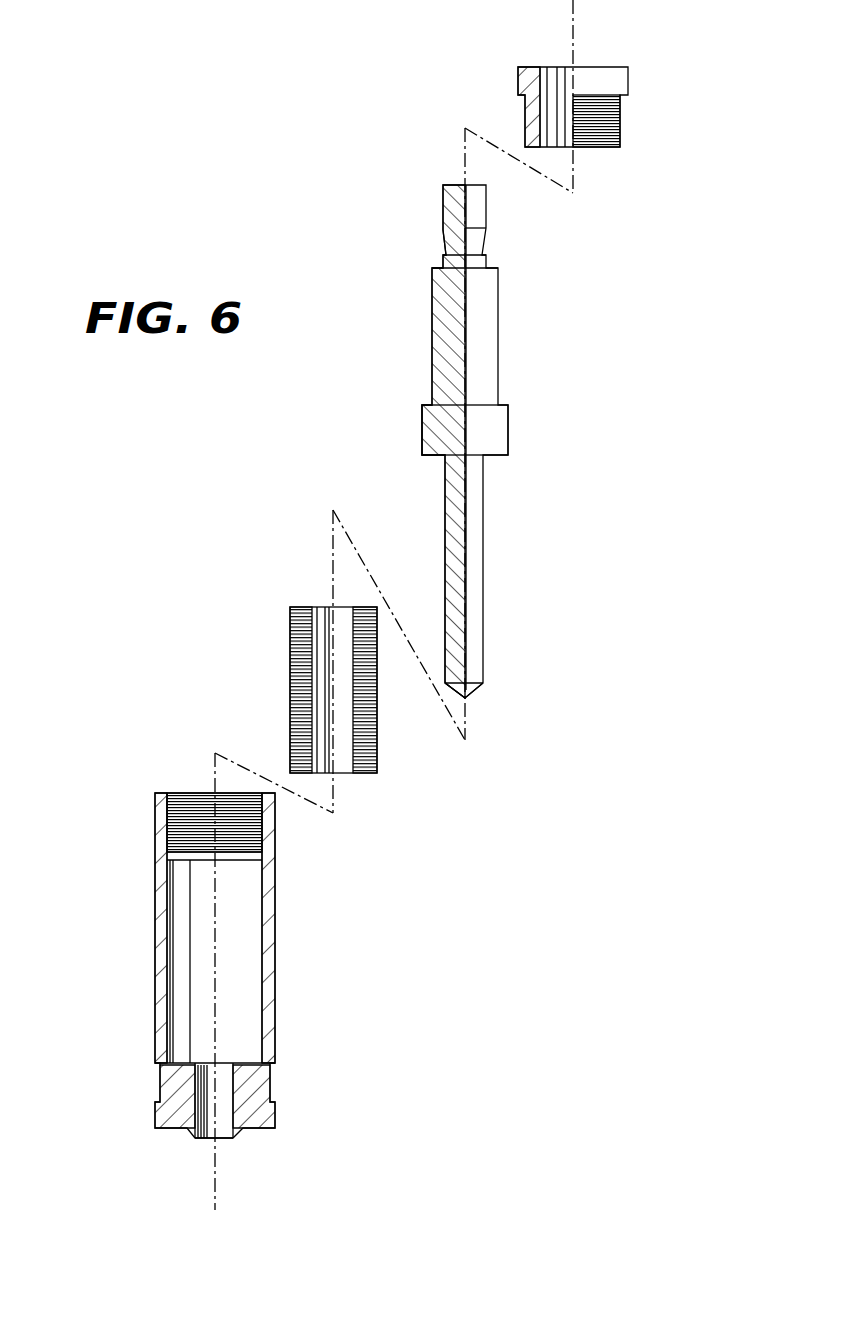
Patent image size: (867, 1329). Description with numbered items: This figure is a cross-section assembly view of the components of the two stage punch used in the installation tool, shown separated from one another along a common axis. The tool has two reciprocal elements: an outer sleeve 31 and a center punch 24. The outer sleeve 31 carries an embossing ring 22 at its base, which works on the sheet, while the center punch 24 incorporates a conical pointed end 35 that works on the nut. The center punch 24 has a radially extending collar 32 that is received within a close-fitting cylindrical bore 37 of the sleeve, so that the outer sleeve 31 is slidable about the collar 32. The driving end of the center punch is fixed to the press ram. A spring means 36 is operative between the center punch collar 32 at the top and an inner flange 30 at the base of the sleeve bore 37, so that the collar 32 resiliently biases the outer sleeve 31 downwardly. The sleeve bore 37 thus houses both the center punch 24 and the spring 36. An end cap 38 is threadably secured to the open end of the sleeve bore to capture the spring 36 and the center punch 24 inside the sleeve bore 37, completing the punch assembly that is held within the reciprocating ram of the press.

The embossing ring 22 is at (237, 1135).
The center punch 24 is at (520, 481).
The inner flange 30 is at (162, 1080).
The outer sleeve 31 is at (220, 993).
The radially extending collar 32 is at (503, 432).
The conical pointed end 35 is at (468, 695).
The spring means 36 is at (297, 623).
The cylindrical bore 37 is at (183, 944).
The end cap 38 is at (620, 115).